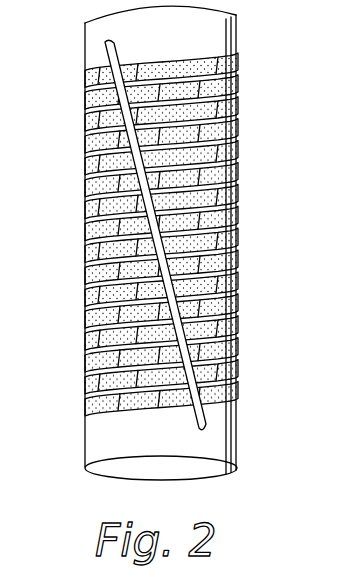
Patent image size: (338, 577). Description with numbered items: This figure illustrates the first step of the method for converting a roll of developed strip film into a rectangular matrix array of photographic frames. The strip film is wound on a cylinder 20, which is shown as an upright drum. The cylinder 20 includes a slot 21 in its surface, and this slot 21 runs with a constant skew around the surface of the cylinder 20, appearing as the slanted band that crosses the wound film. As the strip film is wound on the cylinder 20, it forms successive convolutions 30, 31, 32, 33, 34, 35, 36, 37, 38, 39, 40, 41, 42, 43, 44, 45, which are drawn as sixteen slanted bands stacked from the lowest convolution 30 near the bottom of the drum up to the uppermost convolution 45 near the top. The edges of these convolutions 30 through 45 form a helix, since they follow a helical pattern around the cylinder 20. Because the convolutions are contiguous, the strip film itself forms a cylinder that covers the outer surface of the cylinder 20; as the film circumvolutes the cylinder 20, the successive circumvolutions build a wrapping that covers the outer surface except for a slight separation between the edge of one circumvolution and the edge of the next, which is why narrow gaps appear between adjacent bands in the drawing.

The cylinder 20 is at (226, 475).
The slot 21 is at (203, 430).
The convolution 30 is at (239, 388).
The convolution 31 is at (239, 366).
The convolution 32 is at (239, 344).
The convolution 33 is at (239, 322).
The convolution 34 is at (239, 300).
The convolution 35 is at (239, 278).
The convolution 36 is at (239, 256).
The convolution 37 is at (239, 234).
The convolution 38 is at (239, 212).
The convolution 39 is at (239, 190).
The convolution 40 is at (239, 168).
The convolution 41 is at (239, 147).
The convolution 42 is at (239, 125).
The convolution 43 is at (239, 103).
The convolution 44 is at (239, 81).
The convolution 45 is at (239, 59).